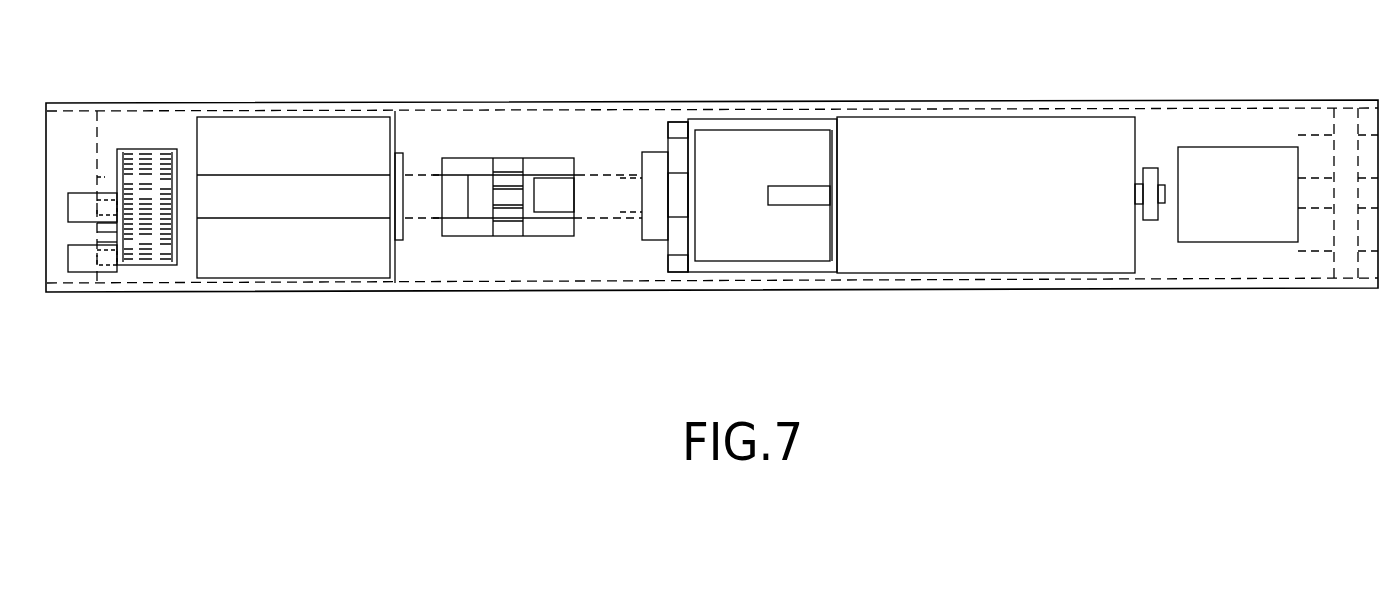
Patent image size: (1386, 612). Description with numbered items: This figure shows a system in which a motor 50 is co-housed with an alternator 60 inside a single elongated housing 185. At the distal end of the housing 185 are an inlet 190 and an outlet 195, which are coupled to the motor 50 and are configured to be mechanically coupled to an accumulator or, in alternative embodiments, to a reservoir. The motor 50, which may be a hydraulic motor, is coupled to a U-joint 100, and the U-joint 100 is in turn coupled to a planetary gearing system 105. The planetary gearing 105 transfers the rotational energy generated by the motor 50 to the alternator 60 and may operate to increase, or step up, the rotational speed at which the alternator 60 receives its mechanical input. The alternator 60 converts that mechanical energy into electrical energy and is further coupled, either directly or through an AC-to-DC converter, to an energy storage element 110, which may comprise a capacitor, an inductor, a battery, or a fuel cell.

The housing 185 is at (547, 102).
The inlet 190 is at (75, 193).
The outlet 195 is at (75, 272).
The motor 50 is at (290, 262).
The U-joint 100 is at (548, 225).
The planetary gearing system 105 is at (763, 247).
The alternator 60 is at (988, 255).
The energy storage element 110 is at (1235, 232).